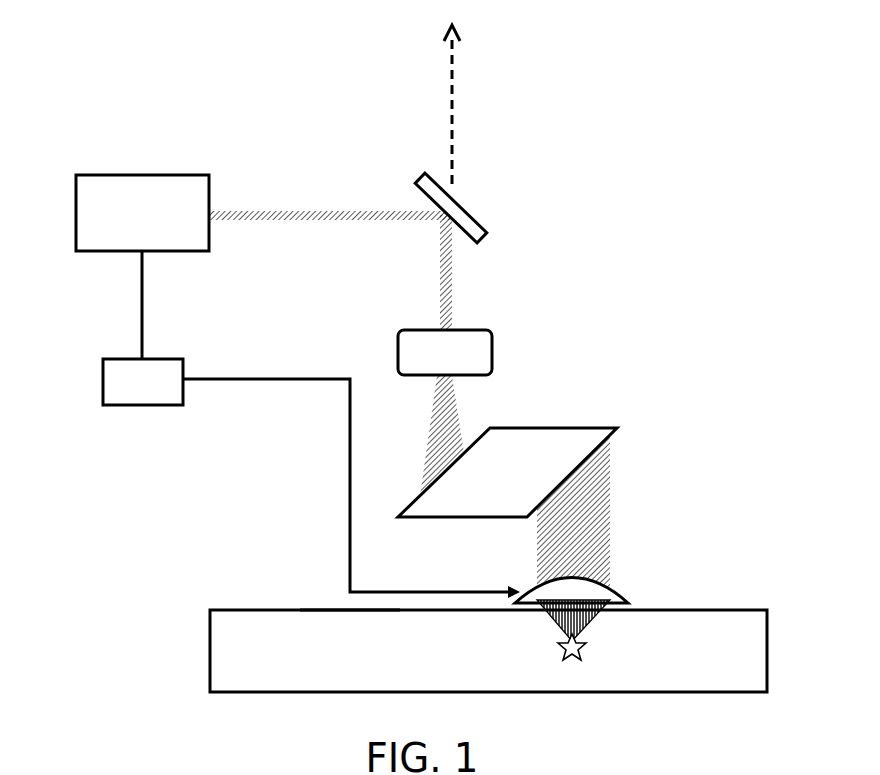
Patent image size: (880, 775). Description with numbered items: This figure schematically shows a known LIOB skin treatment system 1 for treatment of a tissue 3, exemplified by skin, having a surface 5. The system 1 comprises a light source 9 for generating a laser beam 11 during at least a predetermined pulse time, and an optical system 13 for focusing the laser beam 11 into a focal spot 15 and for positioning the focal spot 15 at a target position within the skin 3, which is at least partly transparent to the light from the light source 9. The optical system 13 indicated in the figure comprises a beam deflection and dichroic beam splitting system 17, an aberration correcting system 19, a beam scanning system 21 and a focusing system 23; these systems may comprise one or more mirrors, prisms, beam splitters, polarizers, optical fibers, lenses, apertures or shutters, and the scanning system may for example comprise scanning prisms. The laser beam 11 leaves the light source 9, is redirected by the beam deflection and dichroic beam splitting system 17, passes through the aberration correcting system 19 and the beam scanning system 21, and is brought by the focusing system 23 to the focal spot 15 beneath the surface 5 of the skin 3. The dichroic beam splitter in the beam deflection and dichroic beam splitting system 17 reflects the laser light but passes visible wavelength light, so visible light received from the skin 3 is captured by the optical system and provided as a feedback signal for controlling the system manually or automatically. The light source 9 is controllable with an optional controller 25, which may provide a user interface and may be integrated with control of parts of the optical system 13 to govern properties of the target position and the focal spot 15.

The system 1 is at (674, 141).
The tissue 3 is at (275, 596).
The surface 5 is at (350, 607).
The light source 9 is at (142, 213).
The laser beam 11 is at (452, 118).
The optical system 13 is at (558, 361).
The focal spot 15 is at (585, 650).
The beam deflection and dichroic beam splitting system 17 is at (455, 200).
The aberration correcting system 19 is at (445, 352).
The beam scanning system 21 is at (507, 472).
The focusing system 23 is at (625, 586).
The controller 25 is at (311, 424).